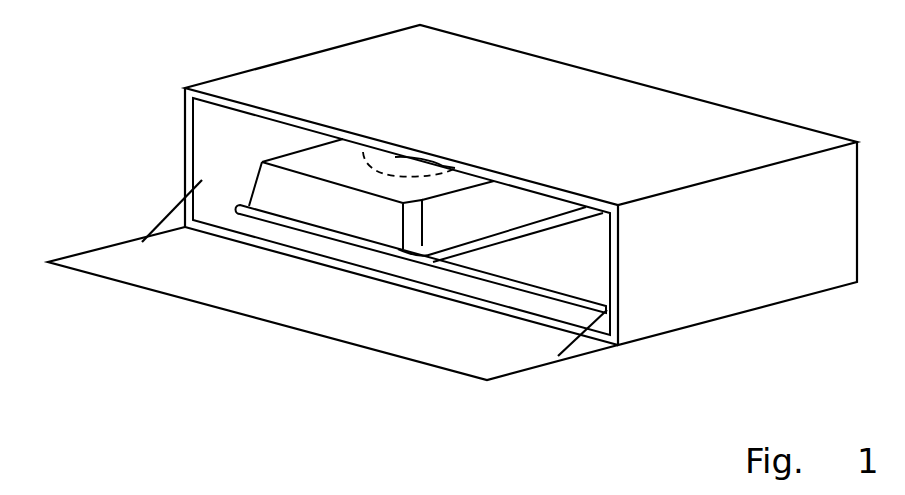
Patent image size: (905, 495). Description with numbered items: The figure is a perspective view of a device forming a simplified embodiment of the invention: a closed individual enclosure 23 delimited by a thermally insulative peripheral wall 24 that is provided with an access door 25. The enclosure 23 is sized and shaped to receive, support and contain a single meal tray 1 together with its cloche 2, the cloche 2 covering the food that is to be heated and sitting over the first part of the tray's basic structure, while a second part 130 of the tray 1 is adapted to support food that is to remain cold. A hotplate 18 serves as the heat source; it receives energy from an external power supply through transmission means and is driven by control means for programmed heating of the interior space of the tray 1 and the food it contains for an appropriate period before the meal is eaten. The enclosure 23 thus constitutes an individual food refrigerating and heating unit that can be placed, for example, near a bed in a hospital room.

The meal tray 1 is at (405, 262).
The cloche 2 is at (296, 208).
The hotplate 18 is at (363, 152).
The enclosure 23 is at (283, 52).
The thermally insulative peripheral wall 24 is at (188, 118).
The access door 25 is at (97, 263).
The second part 130 is at (533, 275).